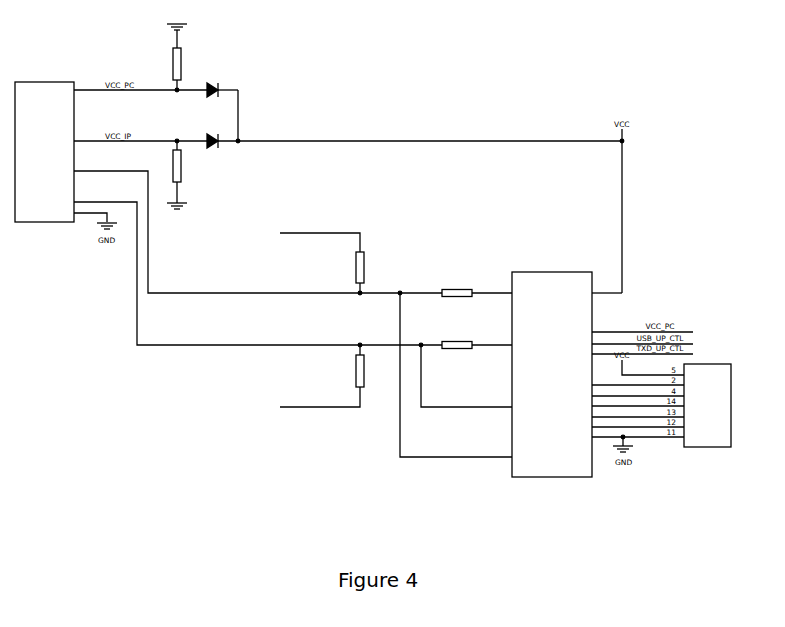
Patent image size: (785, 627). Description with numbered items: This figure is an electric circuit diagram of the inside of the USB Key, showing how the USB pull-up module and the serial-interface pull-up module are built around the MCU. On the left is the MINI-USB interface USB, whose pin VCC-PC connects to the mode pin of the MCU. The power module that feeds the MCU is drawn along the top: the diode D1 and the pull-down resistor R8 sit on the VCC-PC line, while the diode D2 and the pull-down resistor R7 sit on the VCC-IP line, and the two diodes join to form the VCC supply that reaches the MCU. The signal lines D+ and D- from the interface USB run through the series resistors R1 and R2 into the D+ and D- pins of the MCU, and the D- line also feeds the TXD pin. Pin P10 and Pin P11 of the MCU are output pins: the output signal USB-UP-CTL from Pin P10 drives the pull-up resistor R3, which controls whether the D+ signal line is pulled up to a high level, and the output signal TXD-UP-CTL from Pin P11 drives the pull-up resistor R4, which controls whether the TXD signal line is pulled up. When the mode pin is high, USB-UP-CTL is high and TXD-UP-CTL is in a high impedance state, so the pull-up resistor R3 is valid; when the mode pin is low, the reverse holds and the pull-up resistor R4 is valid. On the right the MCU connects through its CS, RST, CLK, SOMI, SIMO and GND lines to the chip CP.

The MINI-USB interface USB is at (51, 153).
The pull-down resistor R8 is at (180, 50).
The pull-down resistor R7 is at (180, 181).
The diode D1 is at (212, 90).
The diode D2 is at (212, 142).
The pull-up resistor R3 is at (331, 258).
The pull-up resistor R4 is at (330, 376).
The resistor R1 24 R1 is at (456, 293).
The resistor R2 24 R2 is at (456, 345).
The element MCU is at (552, 376).
The CP chip CP is at (707, 400).